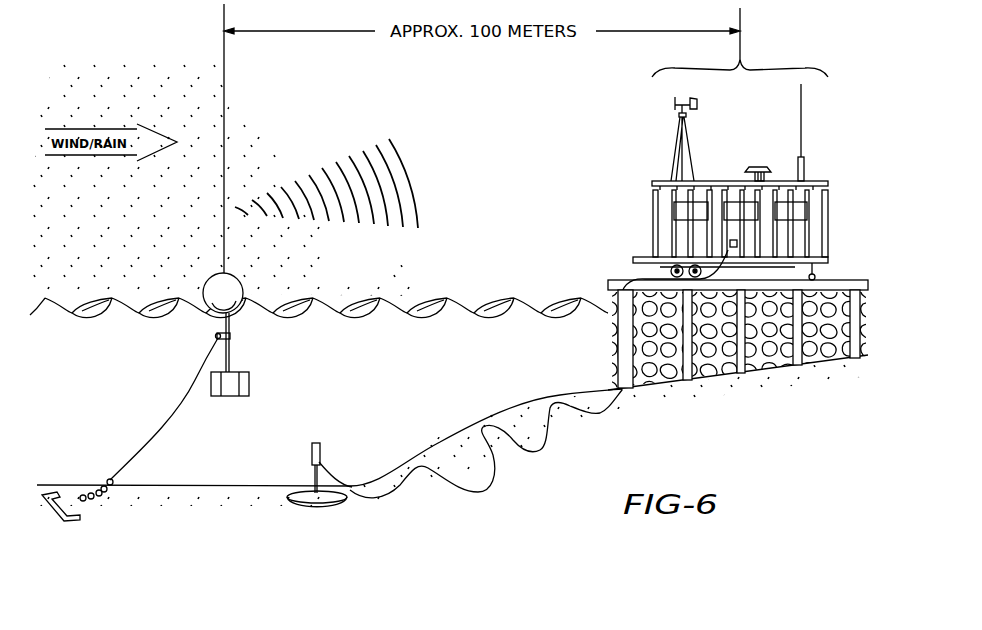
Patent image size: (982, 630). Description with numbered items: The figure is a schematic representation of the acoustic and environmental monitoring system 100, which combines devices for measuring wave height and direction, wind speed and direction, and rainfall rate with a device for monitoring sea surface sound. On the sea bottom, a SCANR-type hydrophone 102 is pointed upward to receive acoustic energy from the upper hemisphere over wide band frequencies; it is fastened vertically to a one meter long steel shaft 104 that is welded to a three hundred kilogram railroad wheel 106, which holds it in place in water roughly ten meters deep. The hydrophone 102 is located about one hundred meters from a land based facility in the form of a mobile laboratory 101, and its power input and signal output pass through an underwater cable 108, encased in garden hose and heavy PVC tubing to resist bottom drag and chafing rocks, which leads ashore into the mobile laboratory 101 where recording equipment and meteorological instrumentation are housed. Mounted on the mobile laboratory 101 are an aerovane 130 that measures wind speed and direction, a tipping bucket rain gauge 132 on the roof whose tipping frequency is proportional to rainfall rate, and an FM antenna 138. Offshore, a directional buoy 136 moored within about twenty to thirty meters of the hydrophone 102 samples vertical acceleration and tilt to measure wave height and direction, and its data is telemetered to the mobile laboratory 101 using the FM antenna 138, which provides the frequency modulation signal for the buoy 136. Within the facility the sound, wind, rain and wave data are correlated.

The acoustic and environmental monitoring system 100 is at (514, 177).
The mobile laboratory 101 is at (826, 210).
The hydrophone 102 is at (321, 455).
The steel shaft 104 is at (312, 477).
The railroad wheel 106 is at (330, 500).
The underwater cable 108 is at (540, 410).
The aerovane 130 is at (692, 98).
The tipping bucket rain gauge 132 is at (758, 166).
The directional buoy 136 is at (208, 312).
The FM antenna 138 is at (802, 117).